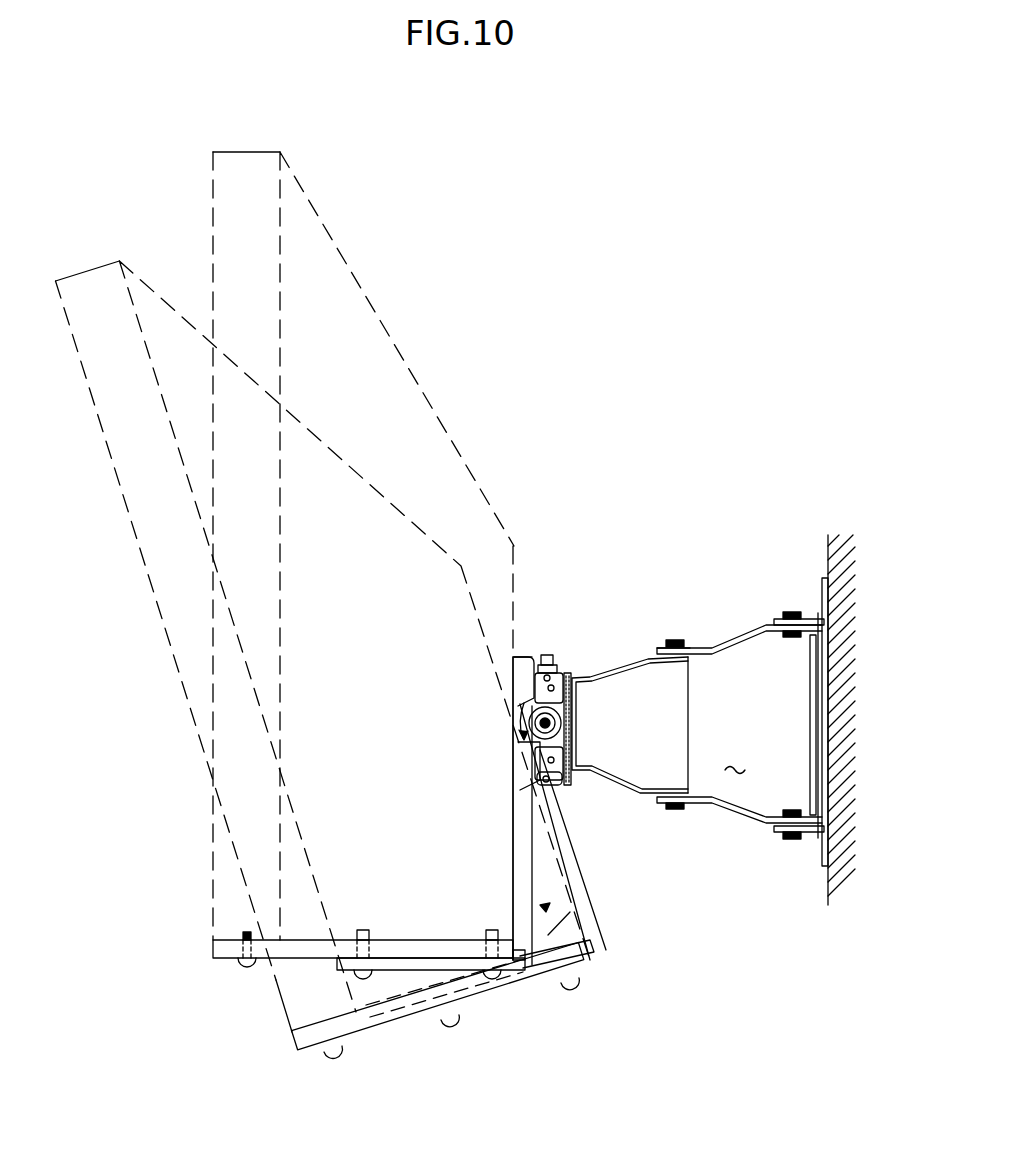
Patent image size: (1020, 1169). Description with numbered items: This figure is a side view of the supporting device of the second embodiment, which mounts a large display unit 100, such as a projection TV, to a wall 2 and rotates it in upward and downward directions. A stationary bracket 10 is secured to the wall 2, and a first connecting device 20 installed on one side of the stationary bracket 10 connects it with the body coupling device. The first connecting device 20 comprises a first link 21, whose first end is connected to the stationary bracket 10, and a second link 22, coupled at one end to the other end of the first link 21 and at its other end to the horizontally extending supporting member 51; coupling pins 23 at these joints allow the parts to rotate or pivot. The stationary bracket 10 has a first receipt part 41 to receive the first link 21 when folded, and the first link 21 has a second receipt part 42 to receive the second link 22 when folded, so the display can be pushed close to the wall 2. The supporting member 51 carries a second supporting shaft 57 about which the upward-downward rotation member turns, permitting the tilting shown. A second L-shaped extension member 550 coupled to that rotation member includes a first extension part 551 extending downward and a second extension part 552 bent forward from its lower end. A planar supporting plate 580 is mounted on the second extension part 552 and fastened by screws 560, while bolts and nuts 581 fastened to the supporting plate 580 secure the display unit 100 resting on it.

The wall 2 is at (826, 540).
The stationary bracket 10 is at (830, 688).
The first connecting device 20 is at (730, 731).
The first link 21 is at (730, 645).
The second link 22 is at (604, 675).
The coupling pins 23 is at (674, 640).
The first receipt part 41 is at (822, 730).
The second receipt part 42 is at (735, 772).
The supporting member 51 is at (552, 780).
The second supporting shaft 57 is at (562, 725).
The display unit 100 is at (213, 820).
The second L-shaped extension member 550 is at (501, 873).
The first extension part 551 is at (535, 876).
The second extension part 552 is at (428, 968).
The screws 560 is at (363, 975).
The supporting plate 580 is at (283, 953).
The bolts and nuts 581 is at (242, 938).